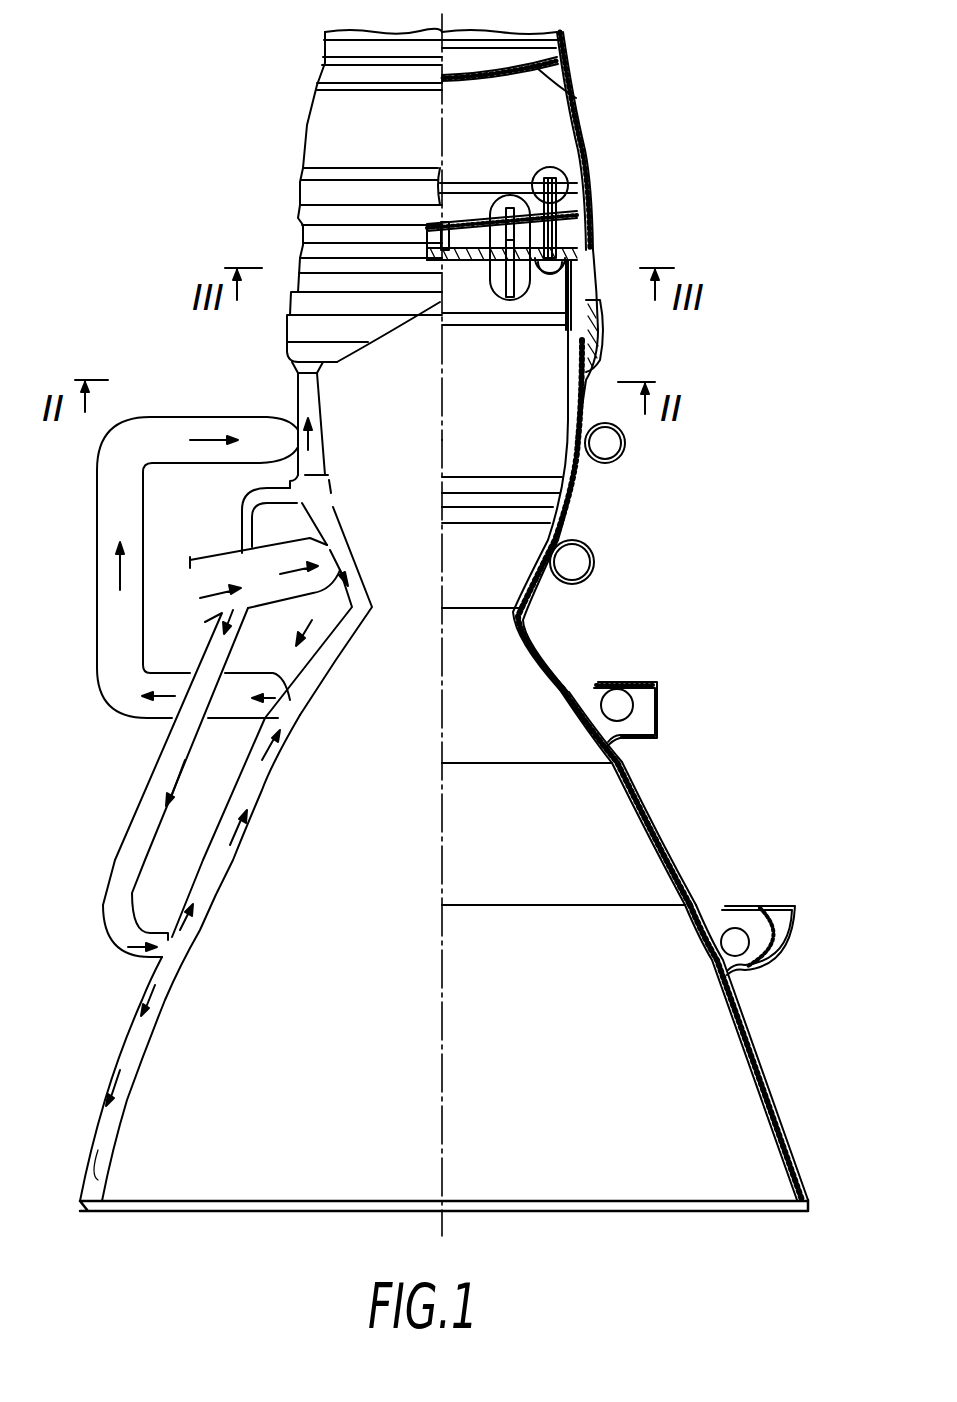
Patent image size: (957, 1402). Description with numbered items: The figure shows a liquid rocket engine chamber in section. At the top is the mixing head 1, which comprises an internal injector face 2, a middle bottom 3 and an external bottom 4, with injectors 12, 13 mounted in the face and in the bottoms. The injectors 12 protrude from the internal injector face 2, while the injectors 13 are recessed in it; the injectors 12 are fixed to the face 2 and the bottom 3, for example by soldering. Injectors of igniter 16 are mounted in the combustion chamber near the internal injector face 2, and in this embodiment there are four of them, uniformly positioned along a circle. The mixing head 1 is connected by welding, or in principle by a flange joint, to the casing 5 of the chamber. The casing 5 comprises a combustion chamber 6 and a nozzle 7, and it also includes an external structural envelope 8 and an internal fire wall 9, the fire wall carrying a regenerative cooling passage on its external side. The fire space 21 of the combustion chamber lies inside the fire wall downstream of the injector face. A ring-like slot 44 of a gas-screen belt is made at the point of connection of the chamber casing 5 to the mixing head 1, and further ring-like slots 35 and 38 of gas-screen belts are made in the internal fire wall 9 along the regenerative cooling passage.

The mixing head 1 is at (589, 224).
The internal injector face 2 is at (552, 268).
The middle bottom 3 is at (462, 226).
The external bottom 4 is at (576, 92).
The casing 5 is at (575, 402).
The combustion chamber 6 is at (603, 366).
The nozzle 7 is at (695, 888).
The external structural envelope 8 is at (556, 656).
The internal fire wall 9 is at (648, 808).
The injectors 12 is at (506, 286).
The injectors 13 is at (585, 190).
The injectors of igniter 16 is at (588, 260).
The fire space 21 is at (446, 422).
The ring-like slot 35 is at (505, 522).
The ring-like slot 38 is at (458, 478).
The ring-like slot 44 is at (510, 330).